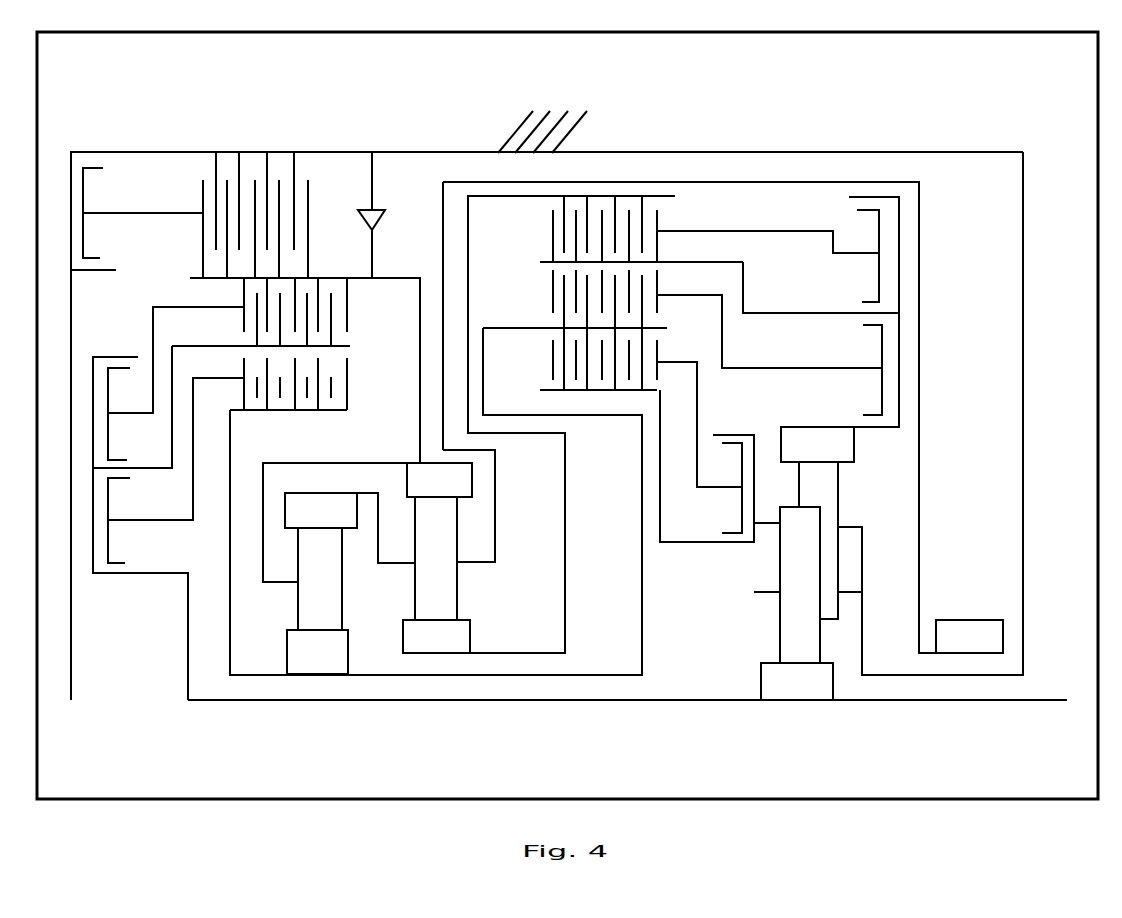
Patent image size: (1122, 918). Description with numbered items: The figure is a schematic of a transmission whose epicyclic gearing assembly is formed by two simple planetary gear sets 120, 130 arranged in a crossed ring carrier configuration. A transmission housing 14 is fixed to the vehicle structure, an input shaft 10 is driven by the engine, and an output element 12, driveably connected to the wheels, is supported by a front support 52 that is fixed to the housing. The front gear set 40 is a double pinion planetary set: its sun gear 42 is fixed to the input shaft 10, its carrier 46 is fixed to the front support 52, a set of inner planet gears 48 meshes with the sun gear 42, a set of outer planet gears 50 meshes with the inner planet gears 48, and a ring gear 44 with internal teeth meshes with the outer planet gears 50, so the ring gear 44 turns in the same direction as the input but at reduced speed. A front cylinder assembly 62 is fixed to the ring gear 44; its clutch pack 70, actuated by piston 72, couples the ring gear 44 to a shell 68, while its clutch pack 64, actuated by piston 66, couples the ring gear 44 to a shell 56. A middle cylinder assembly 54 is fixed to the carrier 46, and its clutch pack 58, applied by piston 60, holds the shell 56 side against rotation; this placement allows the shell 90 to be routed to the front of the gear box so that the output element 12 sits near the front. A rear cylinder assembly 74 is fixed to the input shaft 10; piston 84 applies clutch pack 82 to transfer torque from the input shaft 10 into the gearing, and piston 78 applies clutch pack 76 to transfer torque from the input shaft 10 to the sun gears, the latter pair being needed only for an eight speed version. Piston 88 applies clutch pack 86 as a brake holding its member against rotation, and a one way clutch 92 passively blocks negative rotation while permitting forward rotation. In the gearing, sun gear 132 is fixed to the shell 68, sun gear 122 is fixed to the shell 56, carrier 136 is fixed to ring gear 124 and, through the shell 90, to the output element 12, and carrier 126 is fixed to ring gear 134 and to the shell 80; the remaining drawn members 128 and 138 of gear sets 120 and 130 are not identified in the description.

The input shaft 10 is at (1040, 700).
The output element 12 is at (959, 646).
The transmission housing 14 is at (522, 122).
The front gear set 40 is at (822, 591).
The sun gear 42 is at (797, 681).
The ring gear 44 is at (817, 444).
The carrier 46 is at (862, 535).
The inner planet gears 48 is at (786, 588).
The outer planet gears 50 is at (804, 494).
The front support 52 is at (1023, 470).
The middle cylinder assembly 54 is at (710, 543).
The shell 56 is at (645, 633).
The clutch pack 58 is at (553, 372).
The piston 60 is at (730, 487).
The front cylinder assembly 62 is at (807, 313).
The clutch pack 64 is at (553, 308).
The piston 66 is at (787, 368).
The shell 68 is at (443, 264).
The clutch pack 70 is at (553, 240).
The piston 72 is at (817, 232).
The rear cylinder assembly 74 is at (143, 468).
The clutch pack 76 is at (347, 383).
The piston 78 is at (172, 520).
The shell 80 is at (385, 277).
The clutch pack 82 is at (347, 316).
The piston 84 is at (152, 337).
The clutch pack 86 is at (305, 235).
The piston 88 is at (135, 212).
The shell 90 is at (919, 265).
The one way clutch 92 is at (375, 205).
The simple planetary gear set 120 is at (325, 600).
The sun gear 122 is at (302, 661).
The ring gear 124 is at (321, 510).
The carrier 126 is at (283, 582).
The gear element 128 is at (320, 579).
The simple planetary gear set 130 is at (463, 593).
The sun gear 132 is at (422, 646).
The ring gear 134 is at (425, 491).
The carrier 136 is at (477, 562).
The gear element 138 is at (436, 558).